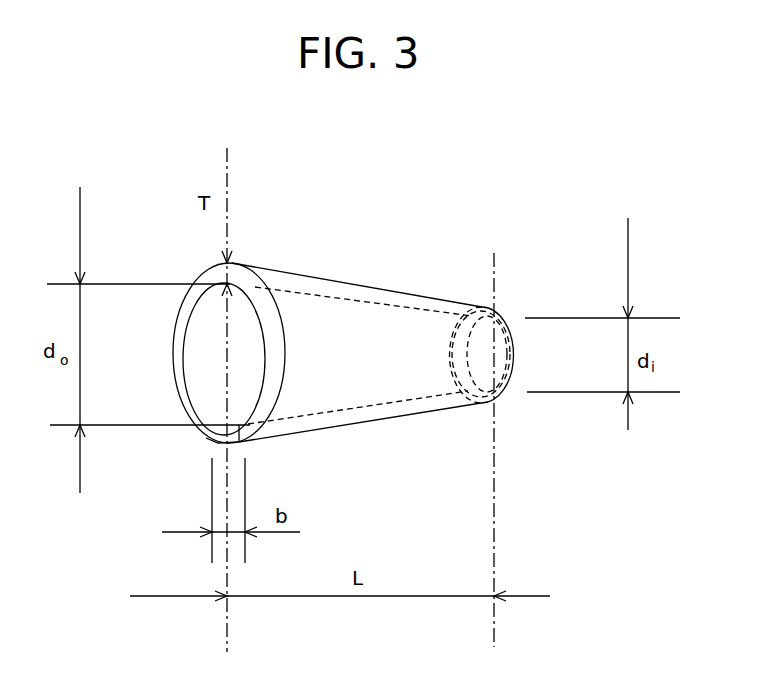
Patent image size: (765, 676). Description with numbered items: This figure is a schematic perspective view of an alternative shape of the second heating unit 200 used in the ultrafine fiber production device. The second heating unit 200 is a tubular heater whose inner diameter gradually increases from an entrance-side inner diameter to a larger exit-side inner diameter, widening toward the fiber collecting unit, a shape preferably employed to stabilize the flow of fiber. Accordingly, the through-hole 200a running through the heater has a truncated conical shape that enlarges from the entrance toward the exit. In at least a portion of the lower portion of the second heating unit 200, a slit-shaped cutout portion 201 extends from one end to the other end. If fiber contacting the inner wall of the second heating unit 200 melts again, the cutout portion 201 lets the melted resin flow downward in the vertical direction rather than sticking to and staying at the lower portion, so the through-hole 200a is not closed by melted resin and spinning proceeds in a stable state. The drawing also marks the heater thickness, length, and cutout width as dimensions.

The second heating unit 200 is at (349, 333).
The through-hole 200a is at (205, 343).
The cutout portion 201 is at (220, 442).